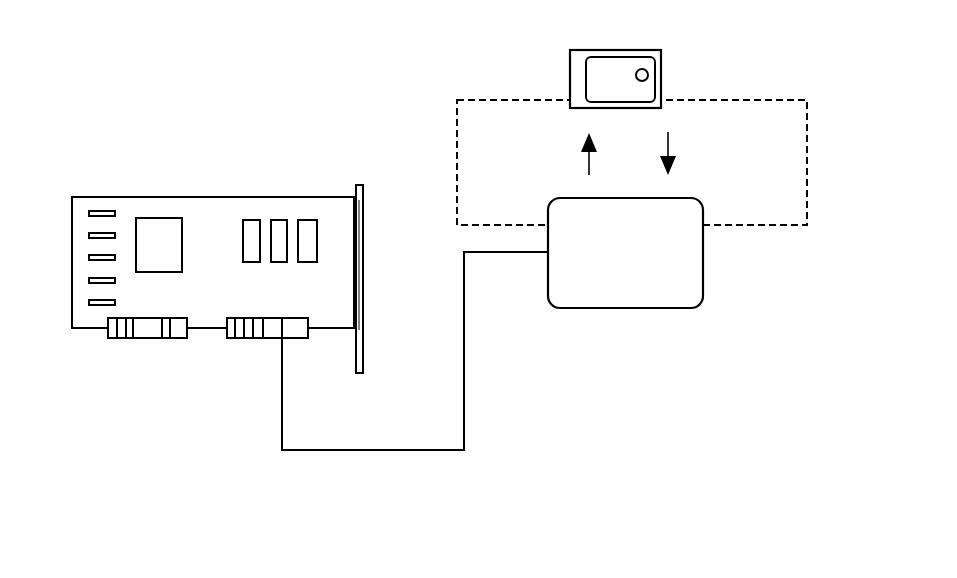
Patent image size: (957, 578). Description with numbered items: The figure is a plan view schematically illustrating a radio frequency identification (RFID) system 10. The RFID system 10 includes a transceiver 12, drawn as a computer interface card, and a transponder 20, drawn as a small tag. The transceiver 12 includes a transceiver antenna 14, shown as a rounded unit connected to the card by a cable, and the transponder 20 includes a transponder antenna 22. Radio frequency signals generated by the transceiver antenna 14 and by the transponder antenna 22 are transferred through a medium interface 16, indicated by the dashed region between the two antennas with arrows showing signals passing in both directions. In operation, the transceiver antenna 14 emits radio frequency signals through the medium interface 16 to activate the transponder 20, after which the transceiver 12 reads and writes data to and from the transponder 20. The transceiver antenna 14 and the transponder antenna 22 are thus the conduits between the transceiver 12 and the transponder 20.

The RFID system 10 is at (215, 92).
The transceiver 12 is at (70, 255).
The transceiver antenna 14 is at (703, 280).
The medium interface 16 is at (807, 127).
The transponder 20 is at (633, 50).
The transponder antenna 22 is at (585, 65).